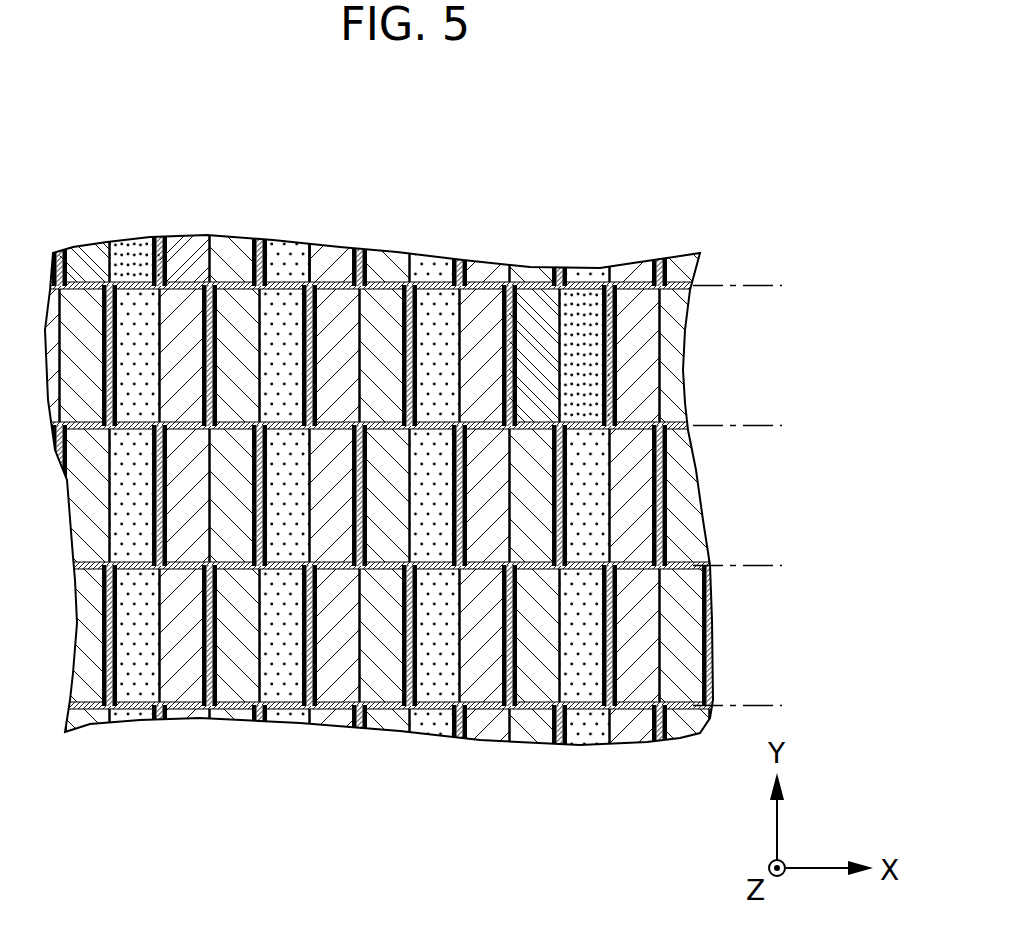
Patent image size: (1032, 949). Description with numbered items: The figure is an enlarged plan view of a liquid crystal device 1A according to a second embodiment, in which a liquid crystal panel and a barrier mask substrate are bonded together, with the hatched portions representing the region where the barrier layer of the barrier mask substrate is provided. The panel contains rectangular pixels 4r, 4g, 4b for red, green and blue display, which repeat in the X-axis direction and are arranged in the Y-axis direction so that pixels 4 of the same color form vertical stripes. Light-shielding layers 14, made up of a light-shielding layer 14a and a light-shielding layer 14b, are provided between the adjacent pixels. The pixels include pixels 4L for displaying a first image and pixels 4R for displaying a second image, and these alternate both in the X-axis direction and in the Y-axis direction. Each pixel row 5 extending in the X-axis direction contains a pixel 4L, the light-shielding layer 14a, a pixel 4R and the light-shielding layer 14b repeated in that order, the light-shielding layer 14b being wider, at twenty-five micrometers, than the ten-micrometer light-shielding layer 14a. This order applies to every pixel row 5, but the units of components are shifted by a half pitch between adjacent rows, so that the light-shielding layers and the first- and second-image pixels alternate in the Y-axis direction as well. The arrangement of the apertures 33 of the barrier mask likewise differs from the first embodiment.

The liquid crystal device 1A is at (588, 212).
The pixels 4 is at (208, 180).
The red pixel 4r is at (92, 258).
The green pixel 4g is at (132, 250).
The blue pixel 4b is at (190, 250).
The light-shielding layers 14 is at (487, 180).
The light-shielding layer 14a is at (497, 268).
The light-shielding layer 14b is at (336, 255).
The pixel row 5 is at (788, 567).
The apertures 33 is at (197, 663).
The pixel 4L is at (468, 767).
The pixel 4R is at (628, 770).